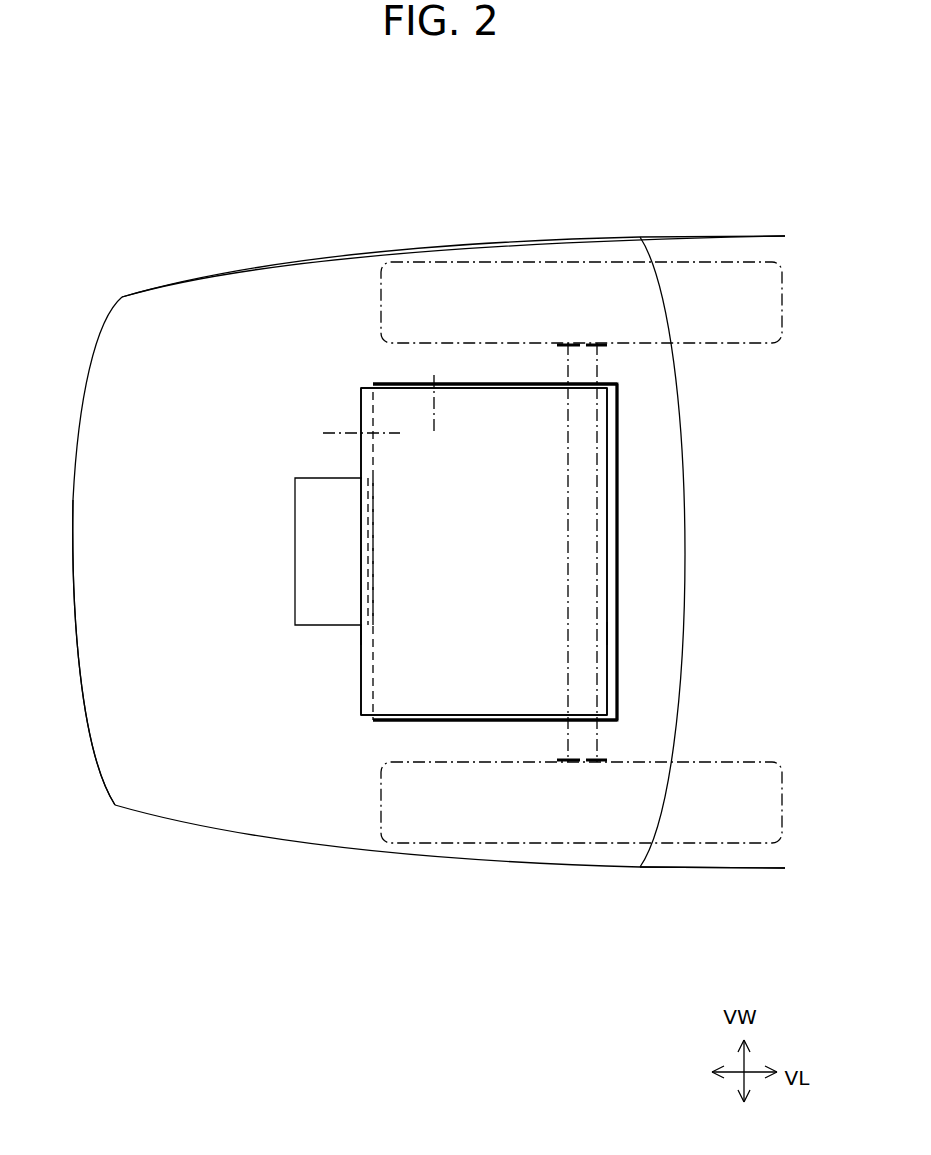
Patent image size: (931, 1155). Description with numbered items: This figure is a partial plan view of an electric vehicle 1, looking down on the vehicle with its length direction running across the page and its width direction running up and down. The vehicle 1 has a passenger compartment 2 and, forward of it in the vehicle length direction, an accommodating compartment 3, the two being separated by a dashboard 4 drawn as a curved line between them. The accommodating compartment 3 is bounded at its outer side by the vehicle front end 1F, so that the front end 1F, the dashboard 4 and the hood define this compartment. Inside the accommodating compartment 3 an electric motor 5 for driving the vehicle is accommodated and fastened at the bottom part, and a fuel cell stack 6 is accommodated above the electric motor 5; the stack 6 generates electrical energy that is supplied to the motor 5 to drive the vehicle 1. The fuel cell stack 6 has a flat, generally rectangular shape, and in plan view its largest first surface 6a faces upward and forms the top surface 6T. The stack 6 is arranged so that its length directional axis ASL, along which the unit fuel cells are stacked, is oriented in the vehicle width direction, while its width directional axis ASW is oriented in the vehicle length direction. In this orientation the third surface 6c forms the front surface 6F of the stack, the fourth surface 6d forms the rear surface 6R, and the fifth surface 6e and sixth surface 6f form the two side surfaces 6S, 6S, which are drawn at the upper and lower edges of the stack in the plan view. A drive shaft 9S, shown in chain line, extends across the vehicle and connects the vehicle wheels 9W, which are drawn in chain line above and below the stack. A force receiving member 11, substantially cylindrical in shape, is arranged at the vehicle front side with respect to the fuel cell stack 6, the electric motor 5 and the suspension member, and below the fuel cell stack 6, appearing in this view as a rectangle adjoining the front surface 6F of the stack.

The electric vehicle 1 is at (760, 175).
The vehicle front end 1F is at (97, 778).
The passenger compartment 2 is at (713, 409).
The accommodating compartment 3 is at (141, 411).
The dashboard 4 is at (680, 706).
The electric motor 5 is at (617, 523).
The fuel cell stack 6 is at (617, 487).
The first surface 6a is at (470, 593).
The top surface 6T is at (470, 666).
The third surface 6c is at (361, 633).
The fourth surface 6d is at (607, 633).
The fifth surface 6e is at (417, 720).
The sixth surface 6f is at (405, 384).
The front surface 6F is at (361, 670).
The rear surface 6R is at (607, 597).
The side surfaces 6S is at (390, 387).
The drive shaft 9S is at (597, 667).
The vehicle wheels 9W is at (598, 262).
The force receiving member 11 is at (297, 525).
The length directional axis ASL is at (438, 391).
The width directional axis ASW is at (336, 433).